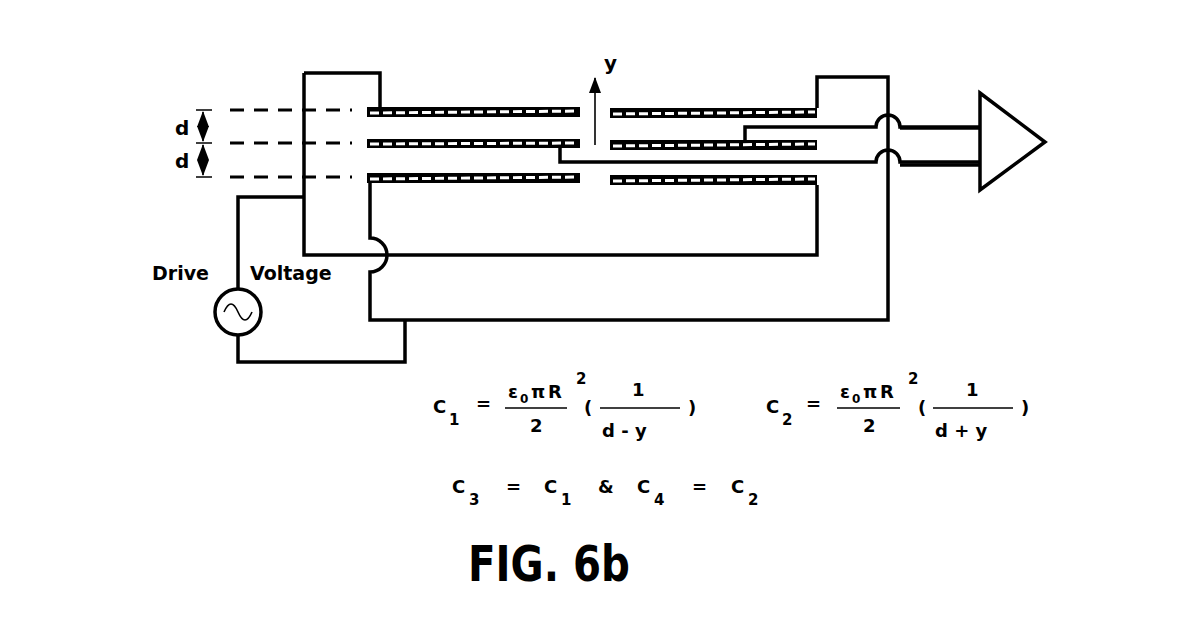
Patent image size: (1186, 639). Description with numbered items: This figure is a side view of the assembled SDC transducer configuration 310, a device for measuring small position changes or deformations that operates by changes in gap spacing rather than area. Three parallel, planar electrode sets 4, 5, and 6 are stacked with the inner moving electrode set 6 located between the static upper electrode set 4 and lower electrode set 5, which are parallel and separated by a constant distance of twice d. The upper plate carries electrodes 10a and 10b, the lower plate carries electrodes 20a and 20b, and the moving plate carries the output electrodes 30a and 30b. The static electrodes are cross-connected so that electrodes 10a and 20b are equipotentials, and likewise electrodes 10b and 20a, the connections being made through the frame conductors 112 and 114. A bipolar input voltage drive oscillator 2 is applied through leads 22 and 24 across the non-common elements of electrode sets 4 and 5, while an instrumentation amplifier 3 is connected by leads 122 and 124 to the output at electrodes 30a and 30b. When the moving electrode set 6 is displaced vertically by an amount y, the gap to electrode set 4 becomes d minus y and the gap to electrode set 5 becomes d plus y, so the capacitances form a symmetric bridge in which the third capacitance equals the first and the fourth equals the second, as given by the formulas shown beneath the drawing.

The bipolar input voltage drive oscillator 2 is at (263, 312).
The instrumentation amplifier 3 is at (1011, 155).
The upper static electrode set 4 is at (772, 105).
The lower static electrode set 5 is at (557, 196).
The moving electrode set 6 is at (652, 133).
The electrode of set 4 10a is at (450, 107).
The electrode of set 4 10b is at (700, 108).
The electrode of set 5 20a is at (448, 185).
The electrode of set 5 20b is at (697, 186).
The electrode of set 6 30a is at (648, 147).
The electrode of set 6 30b is at (795, 136).
The drive voltage lead 22 is at (280, 364).
The drive voltage lead 24 is at (236, 216).
The frame portion 112 is at (651, 256).
The frame portion 114 is at (541, 320).
The amplifier input lead 122 is at (968, 166).
The amplifier input lead 124 is at (968, 127).
The SDC transducer configuration 310 is at (963, 261).